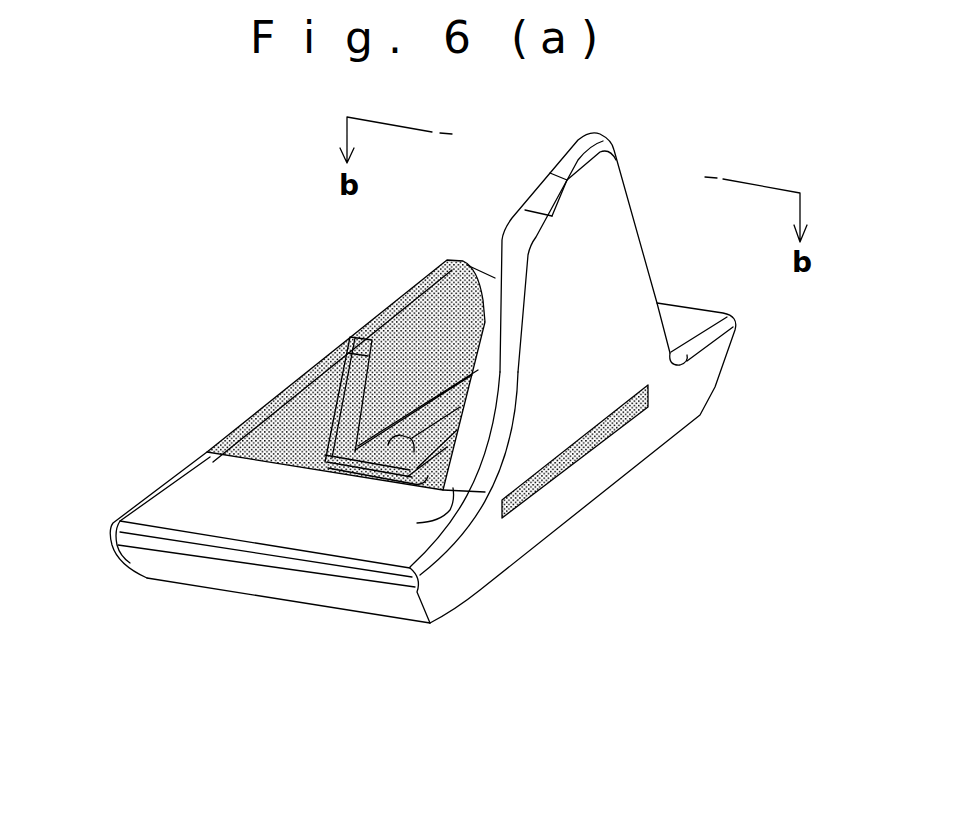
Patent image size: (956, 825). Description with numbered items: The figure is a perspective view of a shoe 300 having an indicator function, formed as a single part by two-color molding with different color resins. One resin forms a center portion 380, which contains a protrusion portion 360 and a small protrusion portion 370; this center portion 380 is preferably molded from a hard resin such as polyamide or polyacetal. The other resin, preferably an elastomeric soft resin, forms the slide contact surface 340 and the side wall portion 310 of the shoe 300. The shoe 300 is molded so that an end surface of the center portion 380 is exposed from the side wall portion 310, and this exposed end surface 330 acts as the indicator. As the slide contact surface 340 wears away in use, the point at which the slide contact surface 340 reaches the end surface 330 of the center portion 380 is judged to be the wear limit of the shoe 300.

The shoe 300 is at (327, 633).
The side wall portion 310 is at (607, 202).
The end surface 330 is at (603, 442).
The slide contact surface 340 is at (150, 580).
The protrusion portion 360 is at (415, 340).
The small protrusion portion 370 is at (347, 472).
The center portion 380 is at (263, 427).